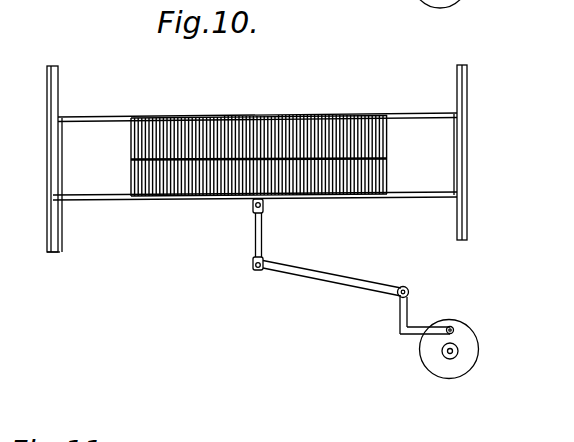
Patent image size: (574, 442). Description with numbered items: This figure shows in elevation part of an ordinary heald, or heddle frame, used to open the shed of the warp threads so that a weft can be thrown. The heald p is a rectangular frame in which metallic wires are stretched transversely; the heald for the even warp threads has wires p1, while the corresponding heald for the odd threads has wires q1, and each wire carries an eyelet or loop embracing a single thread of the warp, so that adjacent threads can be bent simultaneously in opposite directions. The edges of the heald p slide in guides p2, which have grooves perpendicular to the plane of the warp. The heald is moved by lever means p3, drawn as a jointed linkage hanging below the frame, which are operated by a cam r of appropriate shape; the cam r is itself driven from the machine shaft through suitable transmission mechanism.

The heald p is at (128, 119).
The wires p1 is at (323, 132).
The guides p2 is at (57, 90).
The lever means p3 is at (318, 278).
The wires q1 is at (317, 132).
The cam r is at (463, 343).